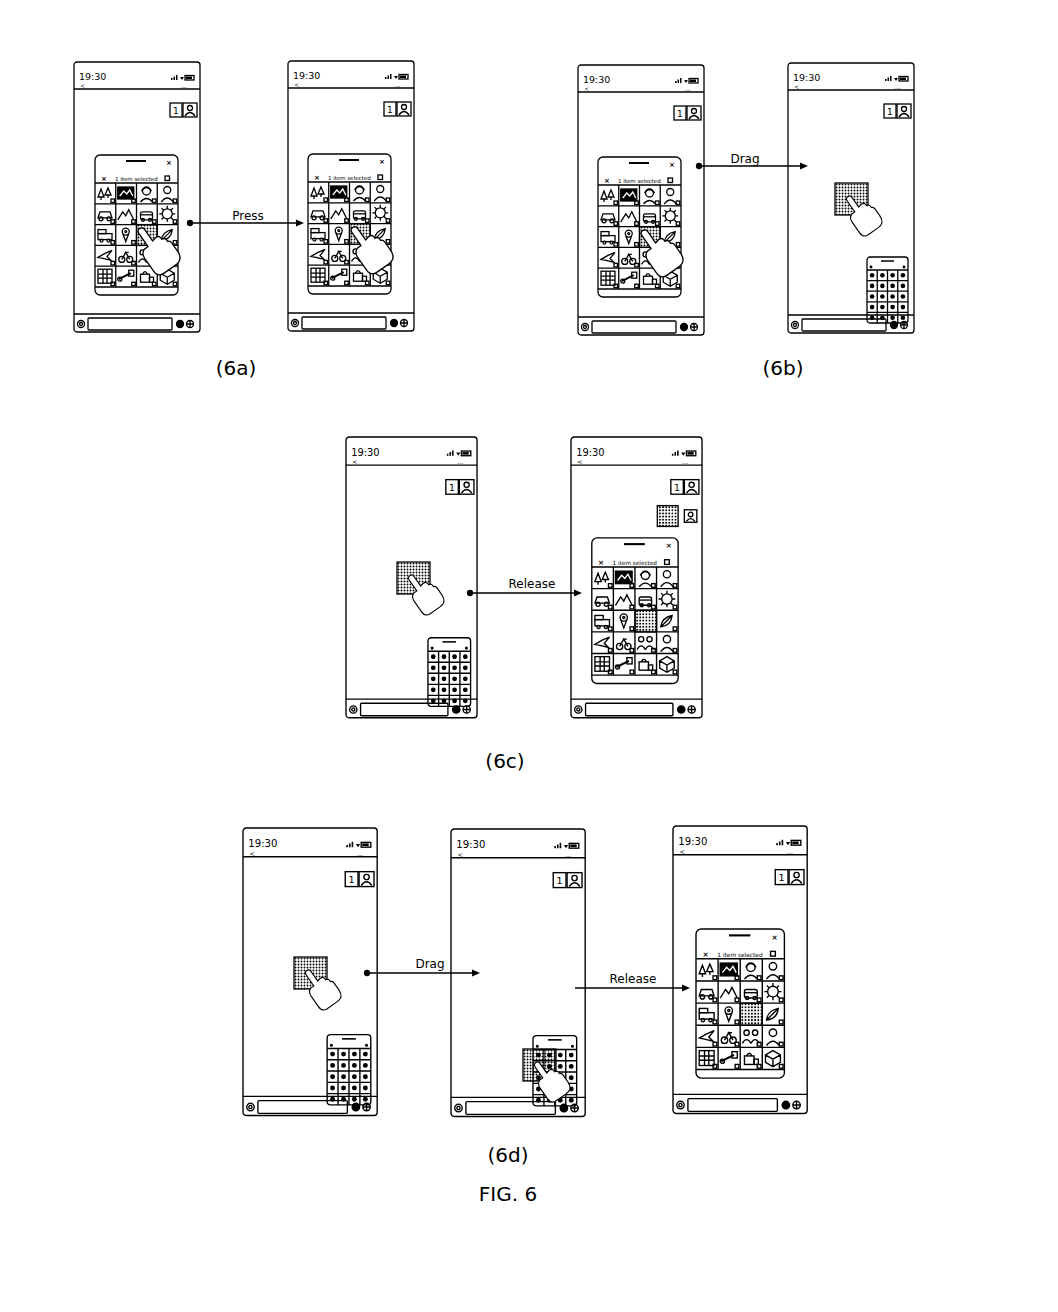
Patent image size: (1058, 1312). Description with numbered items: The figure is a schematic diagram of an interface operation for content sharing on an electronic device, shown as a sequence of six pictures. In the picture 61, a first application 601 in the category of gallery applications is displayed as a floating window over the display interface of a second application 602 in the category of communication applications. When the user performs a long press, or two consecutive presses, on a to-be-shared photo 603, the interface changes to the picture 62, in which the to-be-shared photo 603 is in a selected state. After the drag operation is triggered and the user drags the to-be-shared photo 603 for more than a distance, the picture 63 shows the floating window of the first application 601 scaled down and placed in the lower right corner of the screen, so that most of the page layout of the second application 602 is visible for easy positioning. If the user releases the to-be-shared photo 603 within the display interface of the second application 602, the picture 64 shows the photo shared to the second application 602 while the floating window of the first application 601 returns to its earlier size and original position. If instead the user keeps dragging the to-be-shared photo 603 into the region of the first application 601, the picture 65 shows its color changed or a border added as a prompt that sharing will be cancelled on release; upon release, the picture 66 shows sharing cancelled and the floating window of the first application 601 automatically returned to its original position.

The picture 61 is at (139, 69).
The picture 62 is at (365, 70).
The picture 63 is at (867, 73).
The picture 64 is at (648, 446).
The picture 65 is at (527, 842).
The picture 66 is at (752, 832).
The first application 601 is at (102, 165).
The second application 602 is at (192, 132).
The to-be-shared photo 603 is at (117, 212).